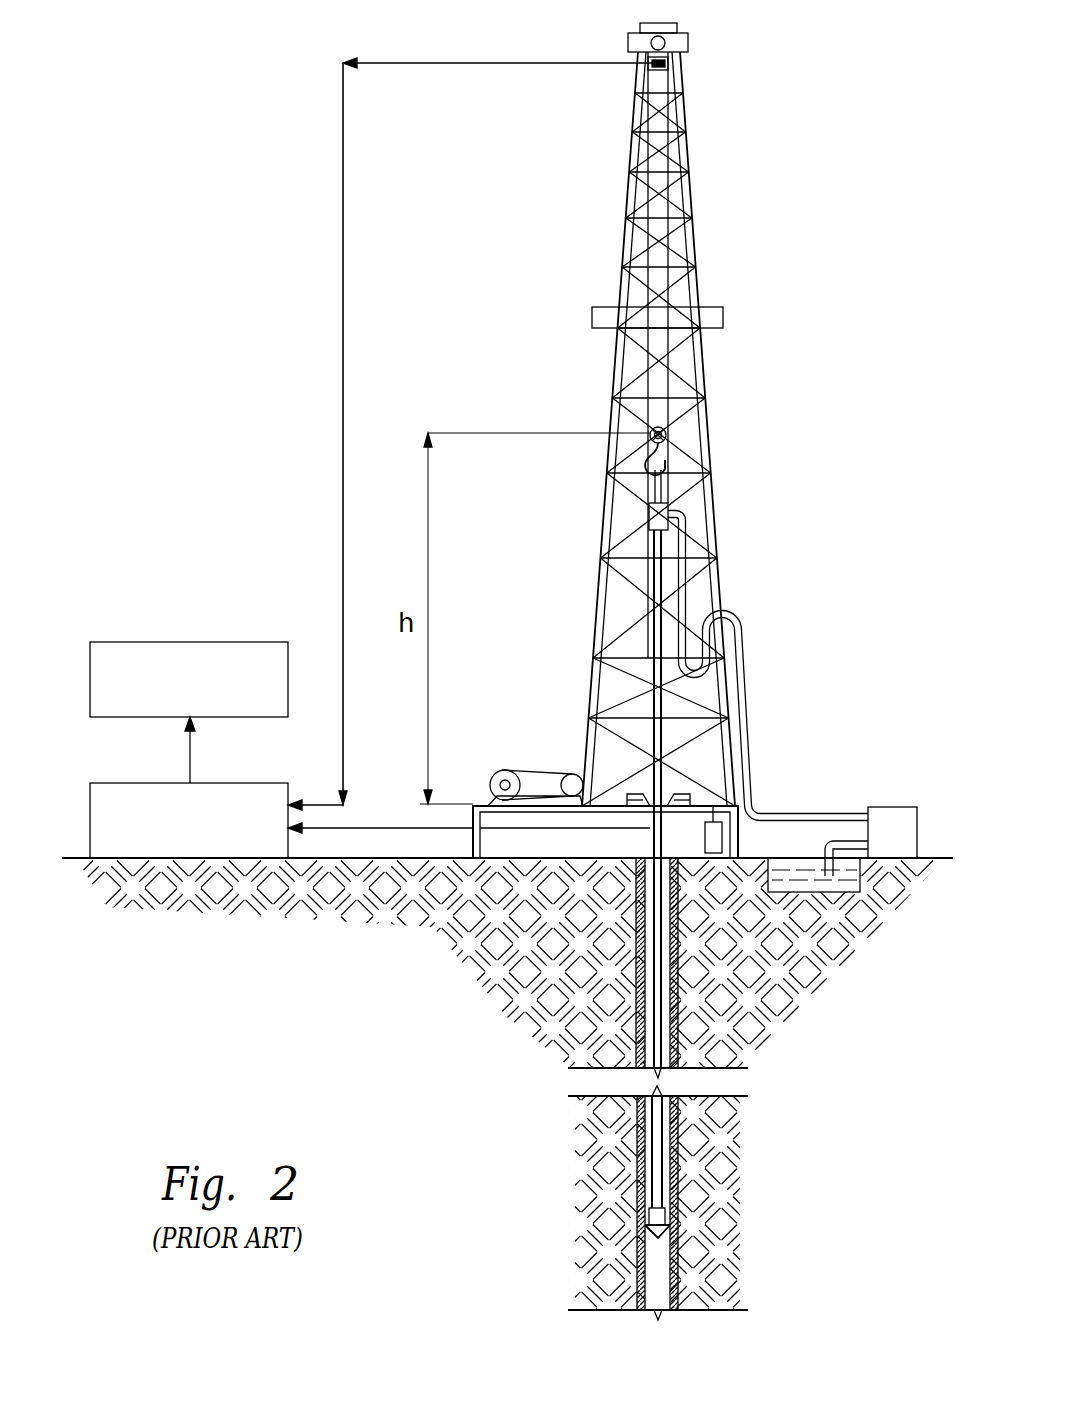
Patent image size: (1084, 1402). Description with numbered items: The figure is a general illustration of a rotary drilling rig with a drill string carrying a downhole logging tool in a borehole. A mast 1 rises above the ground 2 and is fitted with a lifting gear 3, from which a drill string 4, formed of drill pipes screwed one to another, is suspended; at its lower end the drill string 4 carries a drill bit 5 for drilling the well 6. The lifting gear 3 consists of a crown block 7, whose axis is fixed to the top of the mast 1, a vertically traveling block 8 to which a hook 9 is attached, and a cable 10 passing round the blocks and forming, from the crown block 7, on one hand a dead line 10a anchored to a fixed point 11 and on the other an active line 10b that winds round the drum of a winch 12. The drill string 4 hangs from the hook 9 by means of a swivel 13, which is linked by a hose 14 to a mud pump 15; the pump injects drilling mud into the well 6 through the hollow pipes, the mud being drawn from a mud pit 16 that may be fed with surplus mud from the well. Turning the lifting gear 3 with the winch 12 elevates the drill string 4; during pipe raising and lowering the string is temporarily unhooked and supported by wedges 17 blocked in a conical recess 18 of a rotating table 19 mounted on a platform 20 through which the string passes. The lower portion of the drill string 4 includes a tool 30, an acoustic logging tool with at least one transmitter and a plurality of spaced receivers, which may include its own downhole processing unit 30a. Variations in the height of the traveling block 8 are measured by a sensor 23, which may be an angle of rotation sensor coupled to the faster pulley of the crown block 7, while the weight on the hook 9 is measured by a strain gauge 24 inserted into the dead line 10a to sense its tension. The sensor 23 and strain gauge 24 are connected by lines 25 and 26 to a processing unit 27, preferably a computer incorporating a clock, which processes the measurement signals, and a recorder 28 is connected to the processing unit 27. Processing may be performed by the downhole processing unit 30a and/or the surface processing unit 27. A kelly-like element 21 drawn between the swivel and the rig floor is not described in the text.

The mast 1 is at (662, 429).
The ground 2 is at (510, 862).
The lifting gear 3 is at (650, 385).
The drill string 4 is at (655, 1125).
The drill bit 5 is at (660, 1215).
The well 6 is at (660, 1283).
The crown block 7 is at (652, 38).
The traveling block 8 is at (650, 433).
The hook 9 is at (645, 468).
The cable 10 is at (690, 258).
The dead line 10a is at (705, 592).
The active line 10b is at (602, 590).
The fixed point 11 is at (698, 870).
The winch 12 is at (542, 775).
The swivel 13 is at (648, 518).
The hose 14 is at (744, 640).
The mud pump 15 is at (893, 807).
The mud pit 16 is at (800, 878).
The wedges 17 is at (632, 792).
The conical recess 18 is at (665, 803).
The rotating table 19 is at (628, 800).
The platform 20 is at (699, 803).
The kelly 21 is at (652, 632).
The sensor 23 is at (670, 66).
The strain gauge 24 is at (722, 842).
The line 25 is at (343, 271).
The line 26 is at (365, 828).
The processing unit 27 is at (165, 783).
The recorder 28 is at (165, 642).
The tool 30 is at (655, 1180).
The processing unit 30a is at (655, 1157).